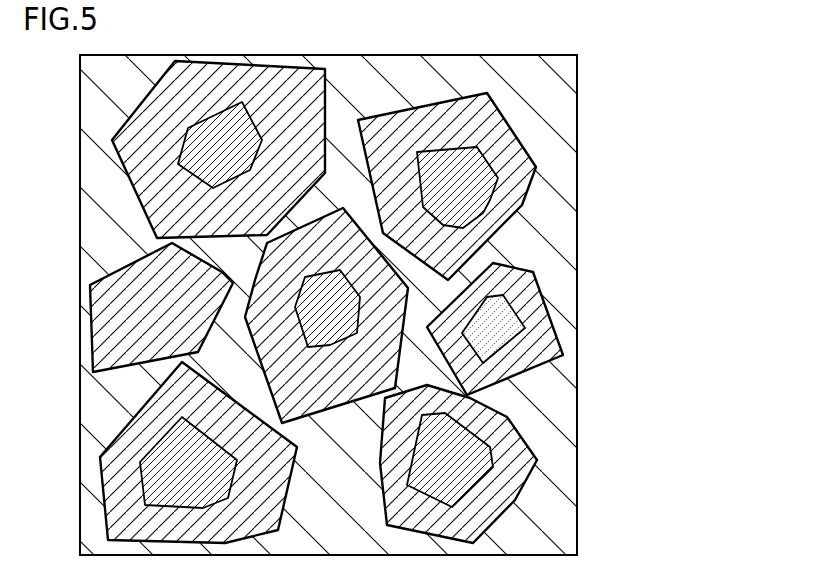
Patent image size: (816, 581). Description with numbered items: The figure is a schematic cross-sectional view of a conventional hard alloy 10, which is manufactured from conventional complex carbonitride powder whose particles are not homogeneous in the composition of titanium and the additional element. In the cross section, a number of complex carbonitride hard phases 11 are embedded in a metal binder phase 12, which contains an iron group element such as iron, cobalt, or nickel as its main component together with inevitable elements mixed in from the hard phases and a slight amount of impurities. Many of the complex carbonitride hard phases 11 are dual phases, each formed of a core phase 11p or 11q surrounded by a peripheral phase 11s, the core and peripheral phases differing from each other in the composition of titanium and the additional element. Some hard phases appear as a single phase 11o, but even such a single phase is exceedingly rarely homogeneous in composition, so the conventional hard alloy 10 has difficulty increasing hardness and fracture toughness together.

The conventional hard alloy 10 is at (415, 305).
The complex carbonitride hard phase 11 is at (398, 302).
The core phase 11p is at (487, 170).
The peripheral phase 11s is at (497, 219).
The single phase 11o is at (197, 283).
The core phase 11q is at (512, 322).
The metal binder phase 12 is at (558, 437).